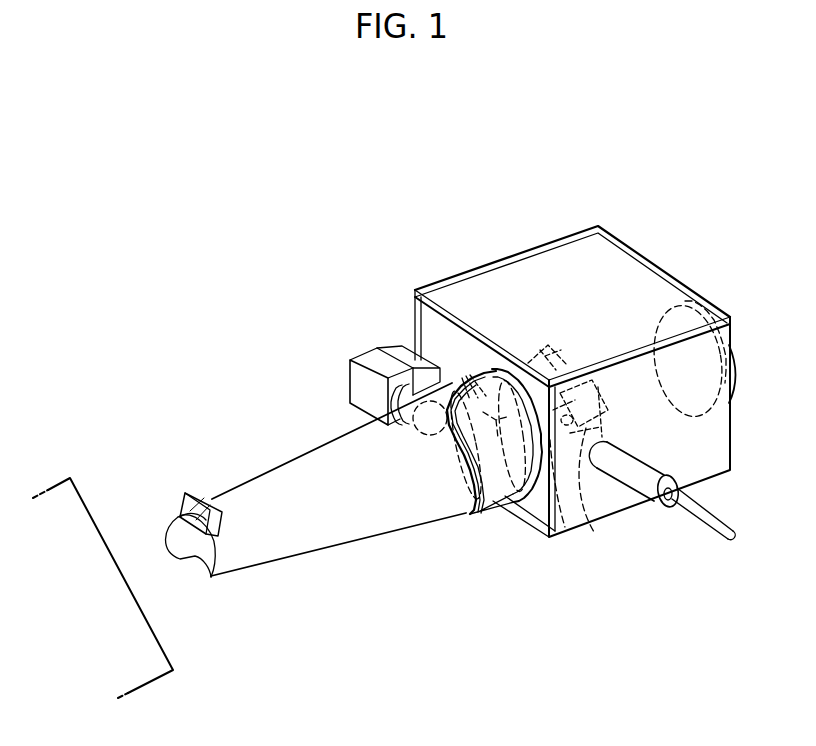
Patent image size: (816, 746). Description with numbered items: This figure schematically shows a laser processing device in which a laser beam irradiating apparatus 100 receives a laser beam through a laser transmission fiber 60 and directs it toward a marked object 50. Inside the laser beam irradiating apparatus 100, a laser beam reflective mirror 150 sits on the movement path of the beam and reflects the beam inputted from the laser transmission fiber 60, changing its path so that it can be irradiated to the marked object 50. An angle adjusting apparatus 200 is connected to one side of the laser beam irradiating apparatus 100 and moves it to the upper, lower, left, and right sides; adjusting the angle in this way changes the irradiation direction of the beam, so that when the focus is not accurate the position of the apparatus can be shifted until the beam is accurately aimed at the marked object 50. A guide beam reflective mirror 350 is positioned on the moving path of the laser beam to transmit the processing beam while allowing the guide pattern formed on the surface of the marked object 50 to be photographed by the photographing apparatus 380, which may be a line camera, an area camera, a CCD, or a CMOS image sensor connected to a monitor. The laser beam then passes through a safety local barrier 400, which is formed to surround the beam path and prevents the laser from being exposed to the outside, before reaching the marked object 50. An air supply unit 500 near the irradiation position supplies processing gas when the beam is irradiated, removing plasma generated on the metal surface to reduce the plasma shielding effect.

The marked object 50 is at (150, 643).
The laser transmission fiber 60 is at (663, 478).
The laser beam irradiating apparatus 100 is at (620, 262).
The laser beam reflective mirror 150 is at (600, 425).
The angle adjusting apparatus 200 is at (695, 303).
The guide beam reflective mirror 350 is at (456, 375).
The photographing apparatus 380 is at (368, 357).
The safety local barrier 400 is at (307, 460).
The air supply unit 500 is at (190, 493).